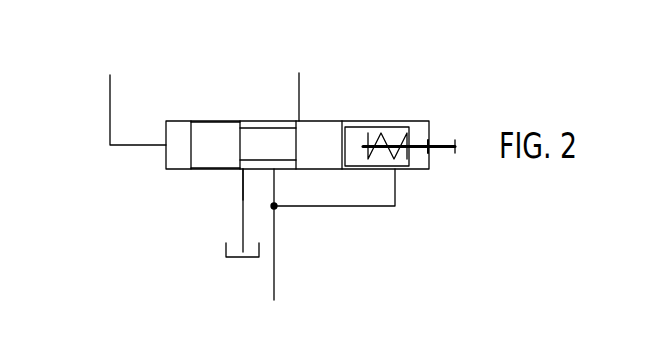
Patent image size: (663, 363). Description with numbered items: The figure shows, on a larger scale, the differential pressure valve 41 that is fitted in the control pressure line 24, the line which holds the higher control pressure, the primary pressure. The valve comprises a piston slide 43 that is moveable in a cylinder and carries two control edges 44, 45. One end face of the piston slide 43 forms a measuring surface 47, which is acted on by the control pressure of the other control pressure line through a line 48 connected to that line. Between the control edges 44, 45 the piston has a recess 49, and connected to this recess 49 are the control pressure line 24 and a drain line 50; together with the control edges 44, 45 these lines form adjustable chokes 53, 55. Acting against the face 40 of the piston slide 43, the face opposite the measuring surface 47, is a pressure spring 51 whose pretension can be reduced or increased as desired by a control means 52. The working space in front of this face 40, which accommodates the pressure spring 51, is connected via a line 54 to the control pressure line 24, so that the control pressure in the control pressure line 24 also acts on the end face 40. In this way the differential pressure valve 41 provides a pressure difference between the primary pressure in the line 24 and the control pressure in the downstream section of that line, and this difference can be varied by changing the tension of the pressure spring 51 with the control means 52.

The control pressure line 24 is at (300, 83).
The face of the piston slide 40 is at (345, 124).
The differential pressure valve 41 is at (368, 120).
The piston slide 43 is at (323, 127).
The control edge 44 is at (240, 172).
The control edge 45 is at (293, 122).
The measuring surface 47 is at (187, 149).
The line 48 is at (110, 99).
The recess 49 is at (248, 124).
The drain line 50 is at (243, 205).
The pressure spring 51 is at (394, 135).
The control means 52 is at (442, 141).
The adjustable choke 53 is at (197, 192).
The line 54 is at (373, 208).
The adjustable choke 55 is at (282, 115).